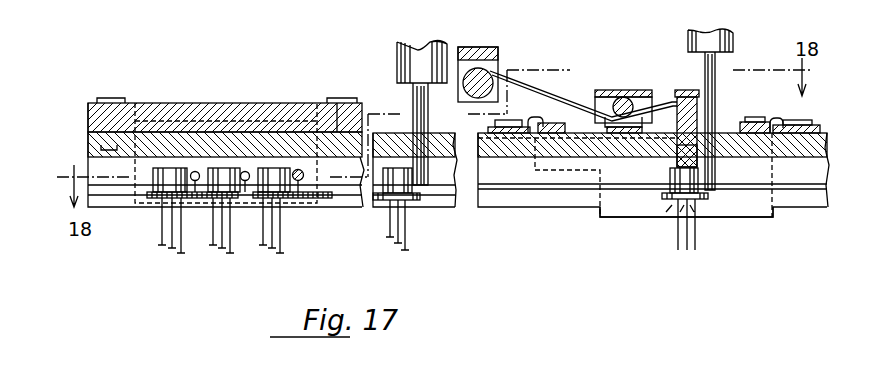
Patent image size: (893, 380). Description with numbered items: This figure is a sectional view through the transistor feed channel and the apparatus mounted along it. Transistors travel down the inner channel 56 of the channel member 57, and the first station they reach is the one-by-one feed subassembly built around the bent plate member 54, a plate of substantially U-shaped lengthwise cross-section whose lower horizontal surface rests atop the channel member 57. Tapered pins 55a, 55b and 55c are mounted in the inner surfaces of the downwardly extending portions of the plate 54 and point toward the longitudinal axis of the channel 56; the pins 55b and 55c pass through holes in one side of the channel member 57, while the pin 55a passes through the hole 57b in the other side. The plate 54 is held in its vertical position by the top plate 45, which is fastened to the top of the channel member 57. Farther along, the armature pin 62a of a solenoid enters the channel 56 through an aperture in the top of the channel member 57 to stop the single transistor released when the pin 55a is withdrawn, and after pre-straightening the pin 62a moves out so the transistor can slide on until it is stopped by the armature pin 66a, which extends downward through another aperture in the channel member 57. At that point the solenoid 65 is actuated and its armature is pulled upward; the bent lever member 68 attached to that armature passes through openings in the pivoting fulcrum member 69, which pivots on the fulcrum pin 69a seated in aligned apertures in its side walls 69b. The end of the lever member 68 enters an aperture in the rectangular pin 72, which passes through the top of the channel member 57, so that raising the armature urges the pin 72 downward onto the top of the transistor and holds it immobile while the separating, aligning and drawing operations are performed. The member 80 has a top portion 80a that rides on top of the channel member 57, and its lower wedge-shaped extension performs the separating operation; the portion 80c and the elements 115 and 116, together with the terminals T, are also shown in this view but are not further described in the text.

The top plate 45 is at (275, 112).
The bent plate member 54 is at (181, 128).
The inner channel 56 is at (122, 167).
The channel member 57 is at (97, 142).
The hole 57b is at (510, 203).
The tapered pin 55a is at (302, 180).
The tapered pin 55b is at (196, 181).
The tapered pin 55c is at (246, 181).
The terminal T is at (172, 182).
The armature pin 62a is at (418, 102).
The solenoid 65 is at (496, 67).
The armature pin 66a is at (708, 105).
The bent lever member 68 is at (600, 102).
The pivoting fulcrum member 69 is at (602, 92).
The fulcrum pin 69a is at (627, 102).
The side walls 69b is at (598, 98).
The rectangular pin 72 is at (672, 95).
The separating wedge-shaped member 80 is at (568, 177).
The top portion 80a is at (548, 108).
The module base 80c is at (643, 212).
The contact pad 115 is at (492, 127).
The contact pad 116 is at (758, 117).